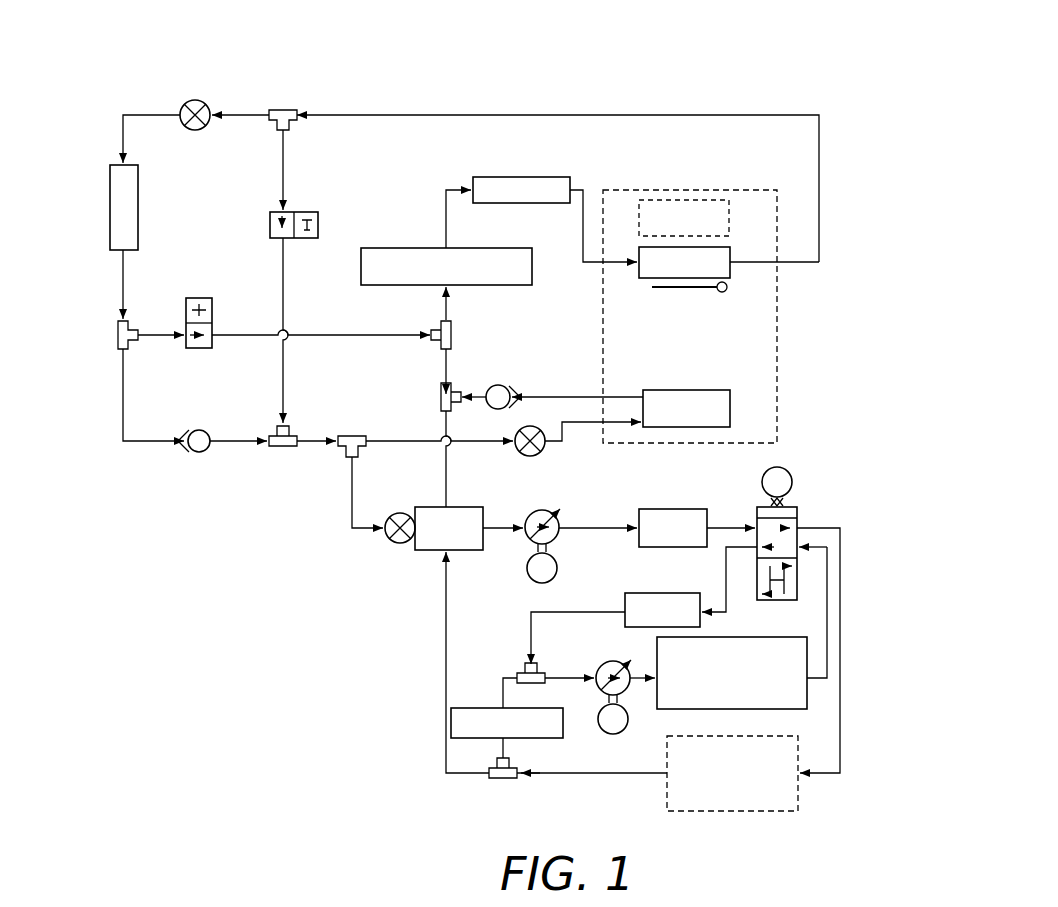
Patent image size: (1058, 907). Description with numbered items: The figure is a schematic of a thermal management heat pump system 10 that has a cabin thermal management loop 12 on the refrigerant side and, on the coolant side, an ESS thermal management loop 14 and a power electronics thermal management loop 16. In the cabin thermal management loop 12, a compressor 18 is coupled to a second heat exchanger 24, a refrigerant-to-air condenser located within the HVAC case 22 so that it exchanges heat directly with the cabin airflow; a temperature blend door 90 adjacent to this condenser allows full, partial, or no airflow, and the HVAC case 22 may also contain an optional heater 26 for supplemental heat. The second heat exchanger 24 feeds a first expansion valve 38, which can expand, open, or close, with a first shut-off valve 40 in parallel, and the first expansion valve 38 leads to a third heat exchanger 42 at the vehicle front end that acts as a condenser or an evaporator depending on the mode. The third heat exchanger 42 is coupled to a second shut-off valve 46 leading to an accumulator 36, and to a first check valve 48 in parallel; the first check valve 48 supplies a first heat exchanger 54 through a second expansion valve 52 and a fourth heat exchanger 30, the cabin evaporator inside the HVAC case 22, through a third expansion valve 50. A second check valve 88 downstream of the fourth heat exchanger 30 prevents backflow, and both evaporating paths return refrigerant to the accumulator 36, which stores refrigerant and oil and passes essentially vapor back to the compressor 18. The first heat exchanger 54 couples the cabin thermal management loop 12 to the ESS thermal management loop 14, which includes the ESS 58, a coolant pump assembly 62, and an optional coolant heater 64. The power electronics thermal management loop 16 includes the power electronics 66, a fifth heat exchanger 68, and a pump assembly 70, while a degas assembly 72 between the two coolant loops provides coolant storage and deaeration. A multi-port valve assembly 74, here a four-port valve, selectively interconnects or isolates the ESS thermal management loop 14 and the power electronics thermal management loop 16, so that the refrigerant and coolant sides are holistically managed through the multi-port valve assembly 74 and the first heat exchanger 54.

The thermal management heat pump system 10 is at (746, 89).
The cabin thermal management loop 12 is at (798, 159).
The ESS thermal management loop 14 is at (823, 511).
The power electronics thermal management loop 16 is at (812, 616).
The compressor 18 is at (513, 178).
The HVAC case 22 is at (742, 190).
The second heat exchanger 24 is at (732, 250).
The heater 26 is at (677, 200).
The fourth heat exchanger 30 is at (651, 389).
The accumulator 36 is at (413, 248).
The first expansion valve 38 is at (199, 100).
The first shut-off valve 40 is at (300, 212).
The third heat exchanger 42 is at (108, 186).
The second shut-off valve 46 is at (197, 298).
The first check valve 48 is at (190, 432).
The third expansion valve 50 is at (521, 452).
The second expansion valve 52 is at (385, 536).
The first heat exchanger 54 is at (428, 552).
The ESS 58 is at (655, 508).
The coolant pump assembly 62 is at (553, 507).
The coolant heater 64 is at (667, 792).
The power electronics 66 is at (807, 697).
The fifth heat exchanger 68 is at (636, 593).
The pump assembly 70 is at (599, 663).
The degas assembly 72 is at (563, 730).
The multi-port valve assembly 74 is at (801, 489).
The second check valve 88 is at (506, 386).
The temperature blend door 90 is at (690, 290).